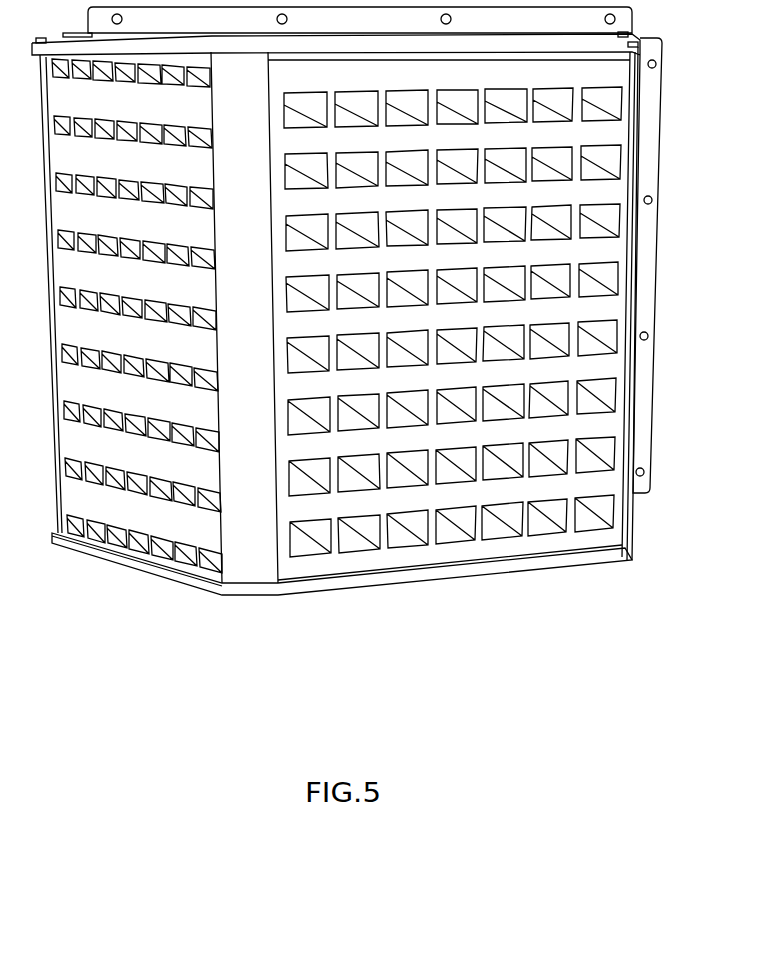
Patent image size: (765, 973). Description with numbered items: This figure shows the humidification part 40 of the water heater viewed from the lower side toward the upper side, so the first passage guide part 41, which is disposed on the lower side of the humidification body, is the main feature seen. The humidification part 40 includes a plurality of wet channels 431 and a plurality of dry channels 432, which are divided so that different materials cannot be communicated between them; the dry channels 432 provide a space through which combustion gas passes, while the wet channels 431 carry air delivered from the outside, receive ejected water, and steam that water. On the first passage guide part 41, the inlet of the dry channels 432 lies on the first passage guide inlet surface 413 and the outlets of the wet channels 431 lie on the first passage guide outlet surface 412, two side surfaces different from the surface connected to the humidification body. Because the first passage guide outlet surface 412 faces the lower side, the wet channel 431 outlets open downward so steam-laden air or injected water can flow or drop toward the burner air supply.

The humidification part 40 is at (347, 346).
The first passage guide part 41 is at (248, 612).
The first passage guide outlet surface 412 is at (131, 361).
The first passage guide inlet surface 413 is at (449, 363).
The wet channels 431 is at (121, 545).
The dry channels 432 is at (500, 536).